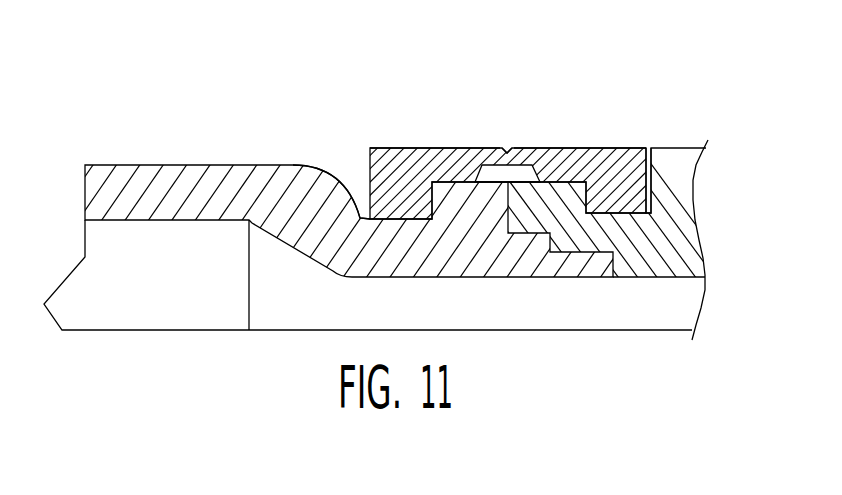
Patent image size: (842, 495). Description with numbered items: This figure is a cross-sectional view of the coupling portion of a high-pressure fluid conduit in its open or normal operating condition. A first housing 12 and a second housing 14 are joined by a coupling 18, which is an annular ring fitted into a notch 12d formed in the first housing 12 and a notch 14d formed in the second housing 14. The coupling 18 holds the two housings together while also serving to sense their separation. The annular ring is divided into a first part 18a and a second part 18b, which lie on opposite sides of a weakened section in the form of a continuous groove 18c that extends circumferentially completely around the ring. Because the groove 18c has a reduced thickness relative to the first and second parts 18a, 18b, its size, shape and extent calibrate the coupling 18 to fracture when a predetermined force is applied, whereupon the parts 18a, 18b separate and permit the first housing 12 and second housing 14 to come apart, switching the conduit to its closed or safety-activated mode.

The first housing 12 is at (174, 166).
The notch in first housing 12d is at (358, 170).
The second housing 14 is at (683, 148).
The notch in second housing 14d is at (647, 148).
The coupling 18 is at (381, 148).
The first part of the annular ring 18a is at (452, 148).
The second part of the annular ring 18b is at (613, 148).
The groove 18c is at (507, 148).